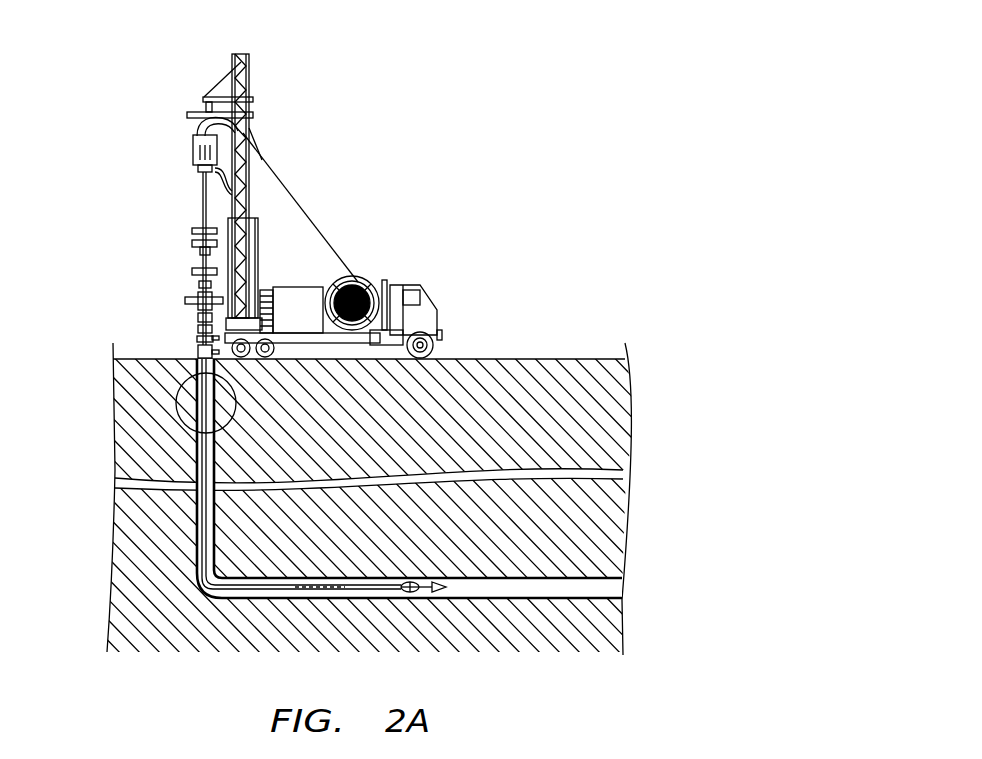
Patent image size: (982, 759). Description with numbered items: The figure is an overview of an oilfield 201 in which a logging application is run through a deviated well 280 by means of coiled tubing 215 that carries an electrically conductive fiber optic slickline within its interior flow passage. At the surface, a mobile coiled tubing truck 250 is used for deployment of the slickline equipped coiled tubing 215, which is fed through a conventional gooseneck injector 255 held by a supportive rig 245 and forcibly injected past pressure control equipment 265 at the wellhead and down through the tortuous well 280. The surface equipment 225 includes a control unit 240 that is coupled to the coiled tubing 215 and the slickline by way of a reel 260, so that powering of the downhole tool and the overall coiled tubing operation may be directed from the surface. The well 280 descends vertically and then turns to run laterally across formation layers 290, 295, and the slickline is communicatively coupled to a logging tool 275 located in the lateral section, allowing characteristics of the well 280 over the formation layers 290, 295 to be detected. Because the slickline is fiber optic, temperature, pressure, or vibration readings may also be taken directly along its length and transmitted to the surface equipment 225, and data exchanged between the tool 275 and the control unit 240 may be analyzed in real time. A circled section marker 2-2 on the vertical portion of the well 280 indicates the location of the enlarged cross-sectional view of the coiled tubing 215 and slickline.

The oilfield 201 is at (525, 359).
The coiled tubing 215 is at (205, 535).
The surface equipment 225 is at (440, 125).
The control unit 240 is at (298, 295).
The rig 245 is at (233, 44).
The mobile coiled tubing truck 250 is at (410, 290).
The gooseneck injector 255 is at (184, 146).
The reel 260 is at (362, 278).
The pressure control equipment 265 is at (155, 256).
The logging tool 275 is at (339, 604).
The well 280 is at (197, 456).
The formation layer 290 is at (356, 419).
The formation layer 295 is at (336, 526).
The section line 2-2 is at (172, 398).